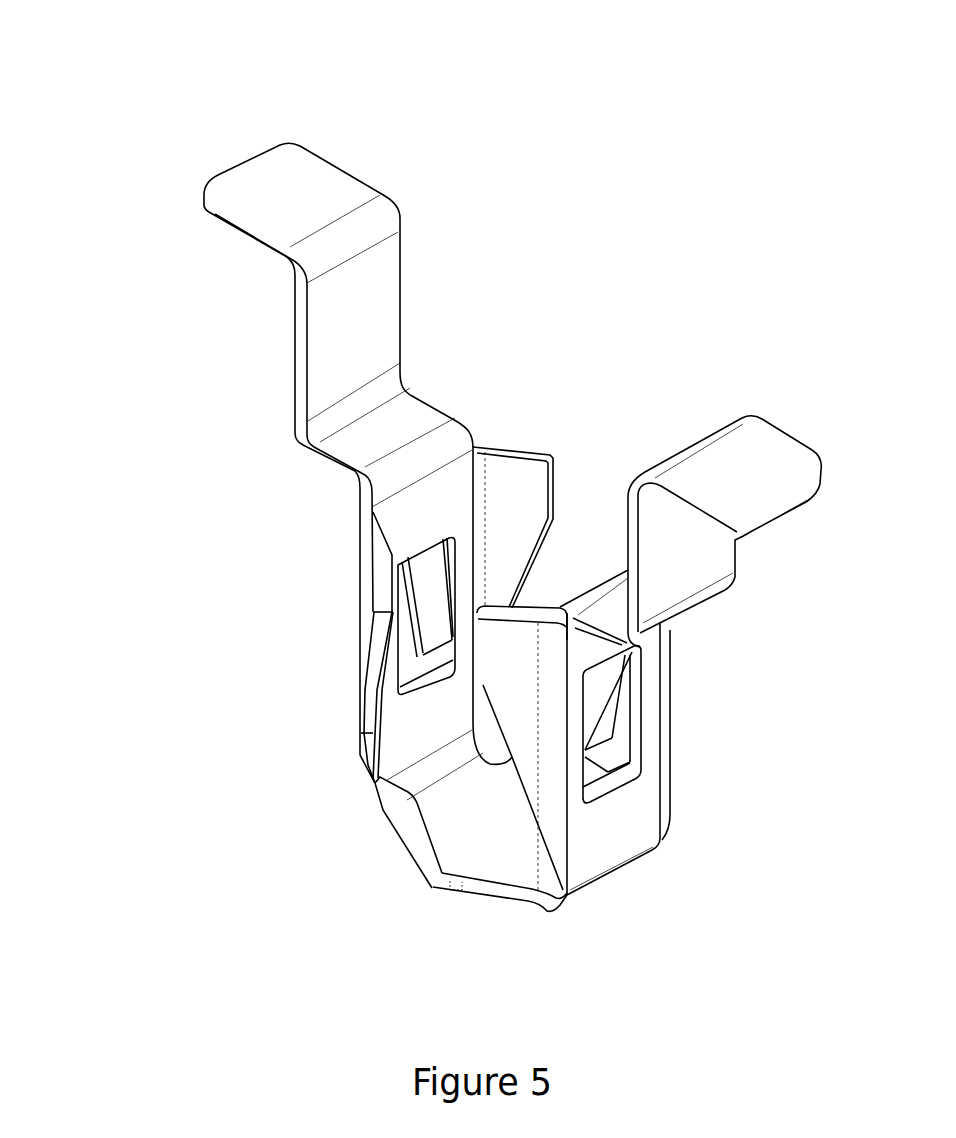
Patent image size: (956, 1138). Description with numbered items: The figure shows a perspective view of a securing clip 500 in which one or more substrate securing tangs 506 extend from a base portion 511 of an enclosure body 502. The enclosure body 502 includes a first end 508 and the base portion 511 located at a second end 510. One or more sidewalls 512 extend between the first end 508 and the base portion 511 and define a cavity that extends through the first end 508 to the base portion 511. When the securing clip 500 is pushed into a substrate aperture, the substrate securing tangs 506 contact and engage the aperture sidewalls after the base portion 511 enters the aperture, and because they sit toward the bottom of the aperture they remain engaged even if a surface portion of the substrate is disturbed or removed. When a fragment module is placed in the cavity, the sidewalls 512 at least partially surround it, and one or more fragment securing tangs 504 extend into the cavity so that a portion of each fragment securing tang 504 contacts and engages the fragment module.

The securing clip 500 is at (145, 68).
The enclosure body 502 is at (520, 447).
The fragment securing tang 504 is at (430, 612).
The substrate securing tang 506 is at (400, 823).
The first end 508 is at (373, 525).
The second end 510 is at (620, 872).
The base portion 511 is at (478, 851).
The sidewall 512 is at (627, 813).